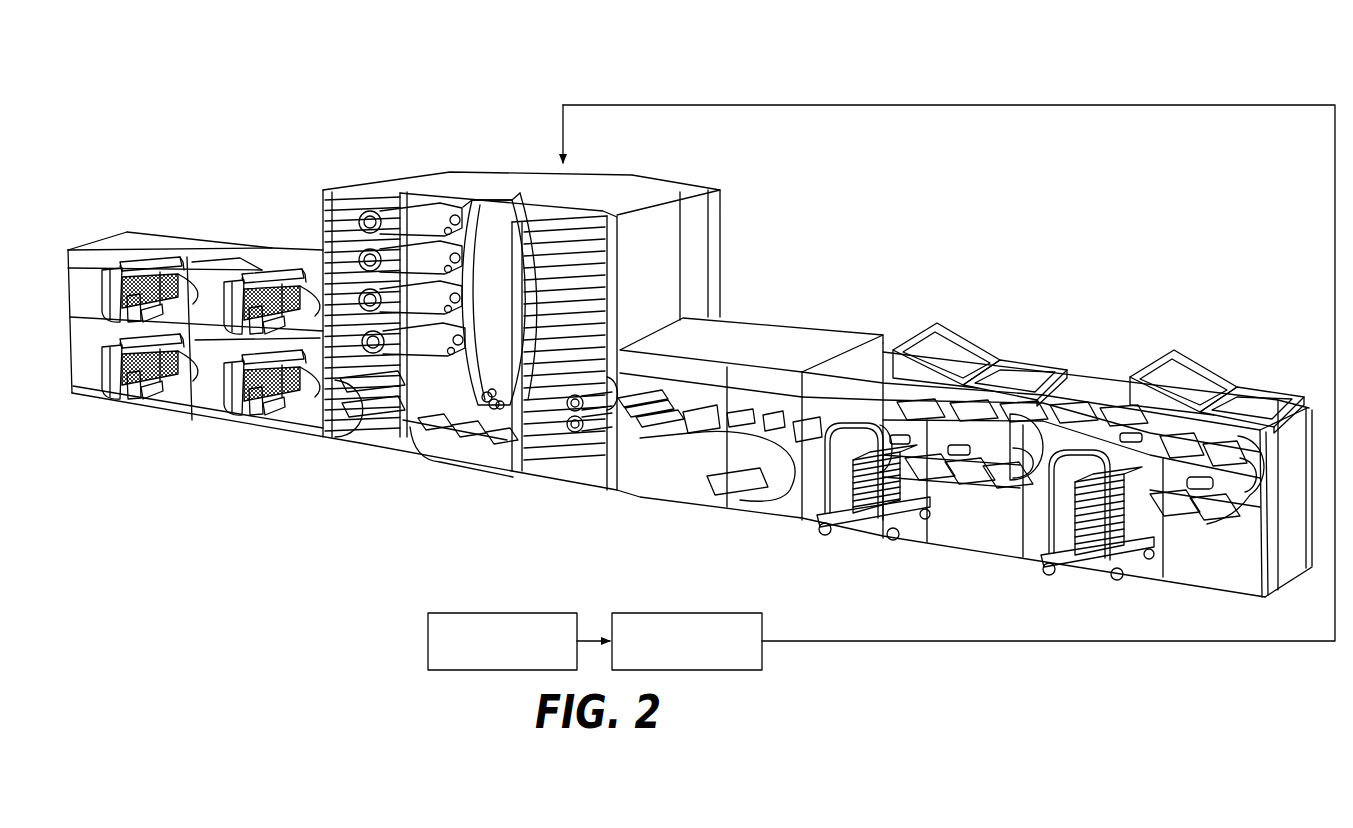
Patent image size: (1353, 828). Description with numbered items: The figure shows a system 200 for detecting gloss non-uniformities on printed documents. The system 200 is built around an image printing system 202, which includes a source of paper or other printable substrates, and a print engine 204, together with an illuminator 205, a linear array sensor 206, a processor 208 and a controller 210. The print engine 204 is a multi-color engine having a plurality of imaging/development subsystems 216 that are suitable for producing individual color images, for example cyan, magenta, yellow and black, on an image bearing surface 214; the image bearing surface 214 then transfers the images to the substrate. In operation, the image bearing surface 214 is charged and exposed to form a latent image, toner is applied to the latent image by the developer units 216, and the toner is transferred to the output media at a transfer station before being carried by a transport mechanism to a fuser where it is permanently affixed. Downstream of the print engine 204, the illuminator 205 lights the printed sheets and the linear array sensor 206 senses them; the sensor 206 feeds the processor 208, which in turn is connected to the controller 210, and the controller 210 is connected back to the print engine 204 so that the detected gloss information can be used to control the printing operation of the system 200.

The system 200 is at (352, 80).
The image printing system 202 is at (330, 178).
The print engine 204 is at (605, 167).
The illuminator 205 is at (690, 412).
The linear array sensor 206 is at (527, 611).
The processor 208 is at (566, 613).
The controller 210 is at (688, 613).
The image bearing surface 214 is at (503, 200).
The imaging/development subsystems 216 is at (384, 200).